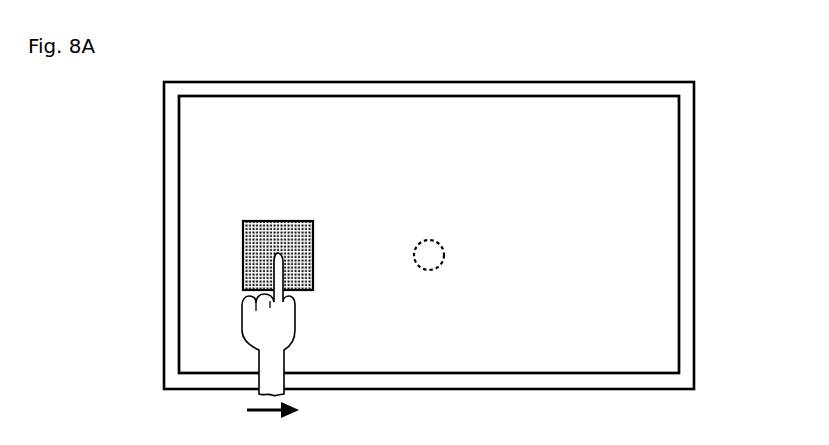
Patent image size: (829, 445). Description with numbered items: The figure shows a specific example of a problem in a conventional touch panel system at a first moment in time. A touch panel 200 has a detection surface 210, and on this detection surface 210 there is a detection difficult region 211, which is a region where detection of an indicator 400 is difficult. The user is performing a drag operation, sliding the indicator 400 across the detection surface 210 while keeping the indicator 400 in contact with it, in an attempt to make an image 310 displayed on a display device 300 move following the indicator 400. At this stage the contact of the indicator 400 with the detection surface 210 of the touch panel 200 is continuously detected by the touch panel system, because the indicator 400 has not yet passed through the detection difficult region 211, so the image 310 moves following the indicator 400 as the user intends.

The touch panel 200 is at (679, 363).
The detection surface 210 is at (668, 105).
The detection difficult region 211 is at (430, 240).
The display device 300 is at (694, 330).
The image 310 is at (243, 225).
The indicator 400 is at (243, 253).